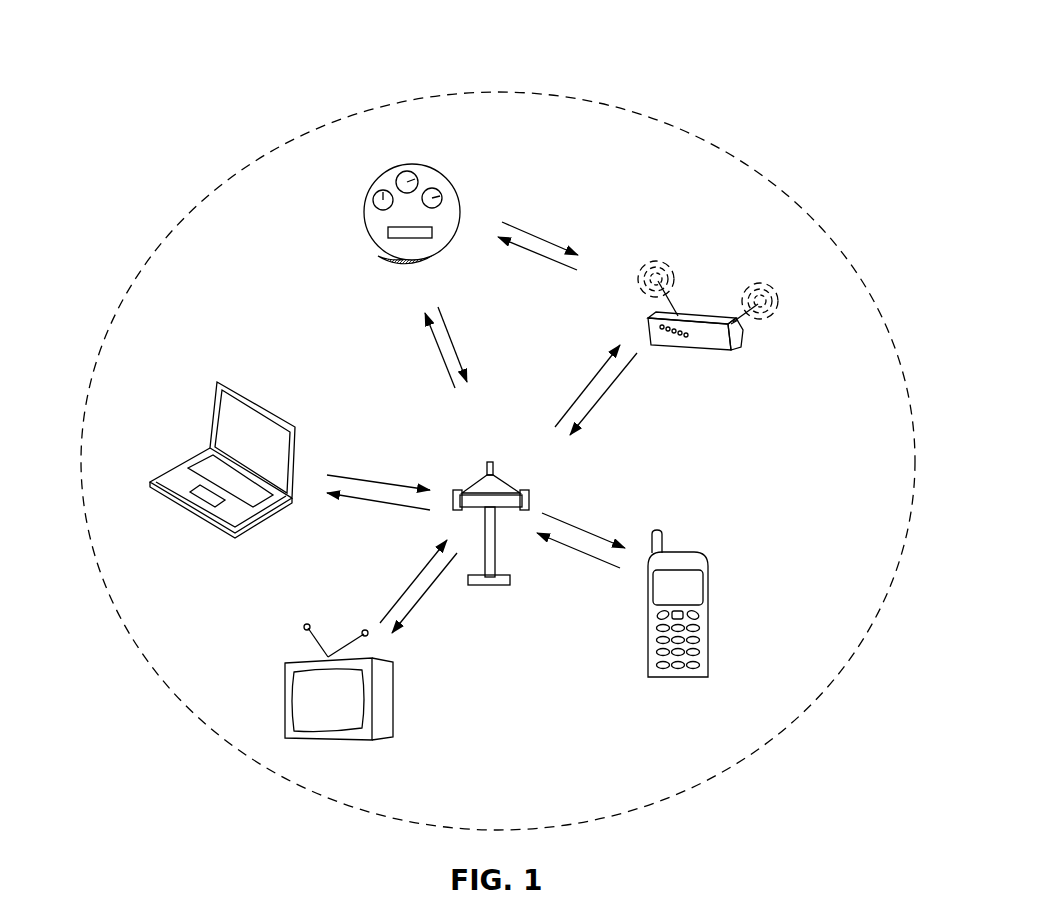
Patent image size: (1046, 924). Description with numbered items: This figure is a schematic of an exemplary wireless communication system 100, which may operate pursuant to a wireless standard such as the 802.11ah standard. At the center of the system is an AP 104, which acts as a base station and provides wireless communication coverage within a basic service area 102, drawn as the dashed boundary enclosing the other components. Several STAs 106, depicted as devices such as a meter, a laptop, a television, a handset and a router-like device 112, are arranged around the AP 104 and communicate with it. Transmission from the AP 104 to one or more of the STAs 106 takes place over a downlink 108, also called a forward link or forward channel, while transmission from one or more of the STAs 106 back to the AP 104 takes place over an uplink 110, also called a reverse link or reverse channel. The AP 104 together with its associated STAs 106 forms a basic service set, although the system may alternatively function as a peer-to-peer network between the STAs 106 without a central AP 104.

The wireless communication system 100 is at (200, 50).
The basic service area 102 is at (497, 92).
The AP 104 is at (492, 462).
The STAs 106 is at (434, 165).
The downlink 108 is at (585, 532).
The uplink 110 is at (598, 560).
The access point 112 is at (723, 360).